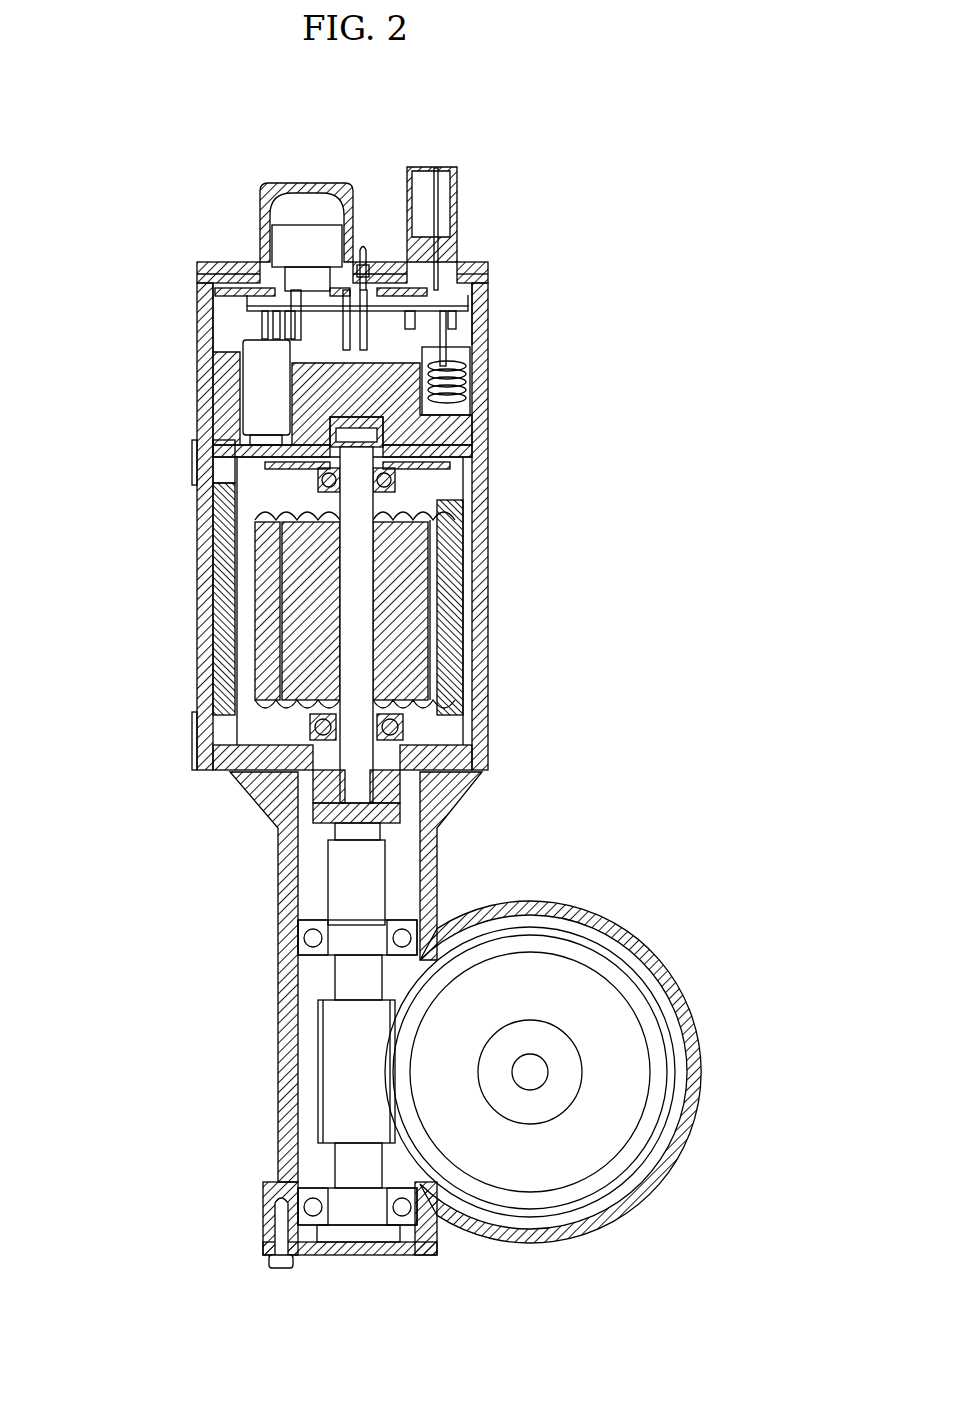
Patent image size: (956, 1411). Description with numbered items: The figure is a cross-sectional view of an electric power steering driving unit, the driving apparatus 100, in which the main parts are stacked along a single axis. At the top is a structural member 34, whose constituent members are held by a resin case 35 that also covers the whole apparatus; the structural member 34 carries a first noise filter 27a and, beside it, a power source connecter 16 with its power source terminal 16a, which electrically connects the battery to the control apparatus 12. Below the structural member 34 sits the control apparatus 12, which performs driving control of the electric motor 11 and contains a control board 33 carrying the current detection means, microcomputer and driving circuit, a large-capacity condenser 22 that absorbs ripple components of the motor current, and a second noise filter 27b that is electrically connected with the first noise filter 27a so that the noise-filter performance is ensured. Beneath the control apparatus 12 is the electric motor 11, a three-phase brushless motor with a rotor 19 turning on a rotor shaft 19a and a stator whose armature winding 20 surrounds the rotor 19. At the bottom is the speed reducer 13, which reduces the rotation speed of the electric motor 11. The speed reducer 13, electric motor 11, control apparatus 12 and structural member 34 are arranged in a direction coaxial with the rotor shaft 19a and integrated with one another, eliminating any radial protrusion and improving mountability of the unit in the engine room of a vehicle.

The driving apparatus 100 is at (582, 744).
The electric motor 11 is at (120, 458).
The control apparatus 12 is at (120, 282).
The speed reducer 13 is at (120, 753).
The structural member 34 is at (120, 147).
The resin case 35 is at (260, 185).
The power source connecter 16 is at (460, 203).
The power source terminal 16a is at (437, 168).
The first noise filter 27a is at (302, 217).
The second noise filter 27b is at (470, 380).
The control board 33 is at (447, 305).
The large-capacity condenser 22 is at (275, 377).
The armature winding 20 is at (453, 558).
The rotor 19 is at (413, 645).
The rotor shaft 19a is at (367, 610).